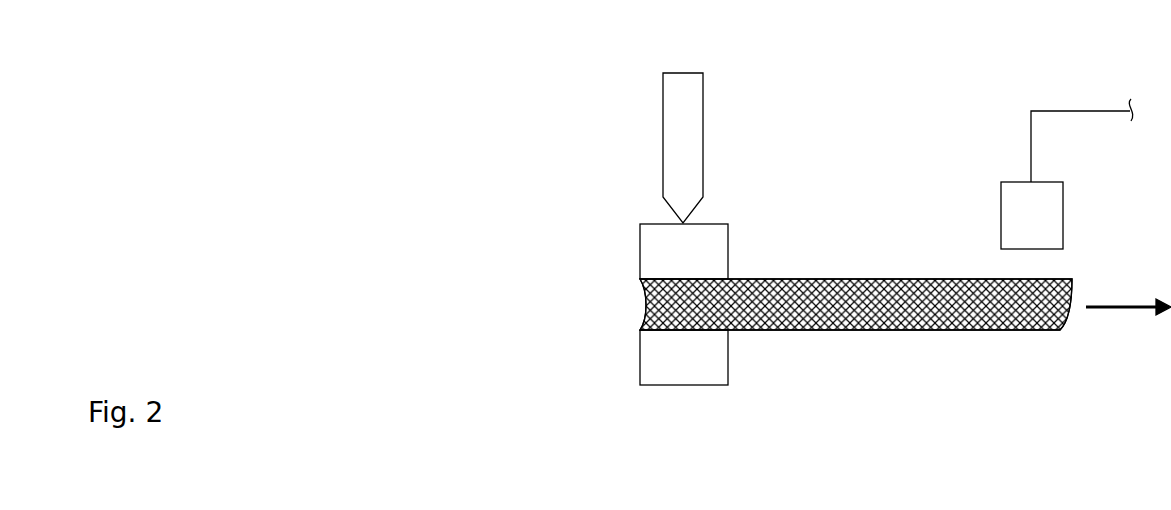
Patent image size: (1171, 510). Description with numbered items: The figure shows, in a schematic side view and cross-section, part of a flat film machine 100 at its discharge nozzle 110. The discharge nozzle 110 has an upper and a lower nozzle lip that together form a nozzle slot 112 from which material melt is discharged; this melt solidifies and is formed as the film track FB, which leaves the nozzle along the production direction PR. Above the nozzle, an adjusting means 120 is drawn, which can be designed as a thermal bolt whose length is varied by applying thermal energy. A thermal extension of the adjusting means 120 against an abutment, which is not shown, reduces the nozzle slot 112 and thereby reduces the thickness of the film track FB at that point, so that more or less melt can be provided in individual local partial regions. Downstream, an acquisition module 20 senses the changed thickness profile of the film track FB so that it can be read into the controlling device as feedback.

The flat film machine 100 is at (410, 249).
The discharge nozzle 110 is at (720, 353).
The nozzle slot 112 is at (748, 271).
The adjusting means 120 is at (675, 138).
The acquisition module 20 is at (1052, 218).
The film track FB is at (981, 332).
The production direction PR is at (1128, 297).